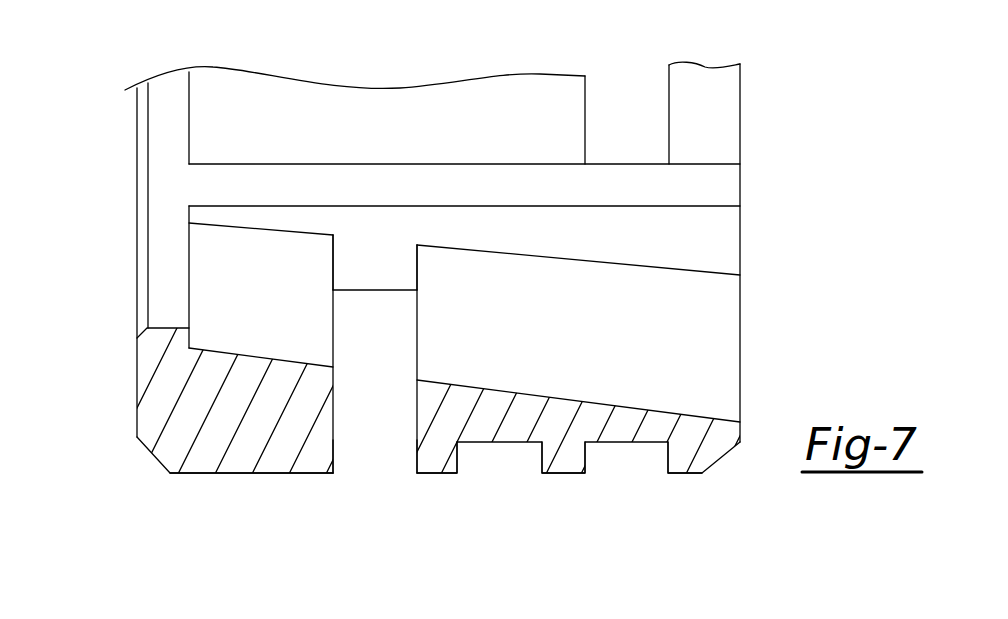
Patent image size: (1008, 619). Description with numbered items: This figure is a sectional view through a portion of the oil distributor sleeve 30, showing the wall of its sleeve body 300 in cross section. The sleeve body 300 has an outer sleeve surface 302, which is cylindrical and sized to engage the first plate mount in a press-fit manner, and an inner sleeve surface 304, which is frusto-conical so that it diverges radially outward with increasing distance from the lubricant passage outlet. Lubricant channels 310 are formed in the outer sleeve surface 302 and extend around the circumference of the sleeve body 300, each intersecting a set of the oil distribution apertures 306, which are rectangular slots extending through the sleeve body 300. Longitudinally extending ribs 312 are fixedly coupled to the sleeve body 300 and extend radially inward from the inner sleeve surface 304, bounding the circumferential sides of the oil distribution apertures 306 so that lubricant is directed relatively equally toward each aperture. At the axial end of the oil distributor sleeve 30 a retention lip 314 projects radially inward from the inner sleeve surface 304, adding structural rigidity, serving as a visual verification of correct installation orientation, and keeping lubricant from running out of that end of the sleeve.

The oil distributor sleeve 30 is at (158, 203).
The longitudinally extending ribs 312 is at (283, 180).
The retention lip 314 is at (162, 343).
The sleeve body 300 is at (197, 421).
The outer sleeve surface 302 is at (232, 473).
The oil distribution apertures 306 is at (375, 362).
The inner sleeve surface 304 is at (670, 410).
The lubricant channels 310 is at (364, 460).